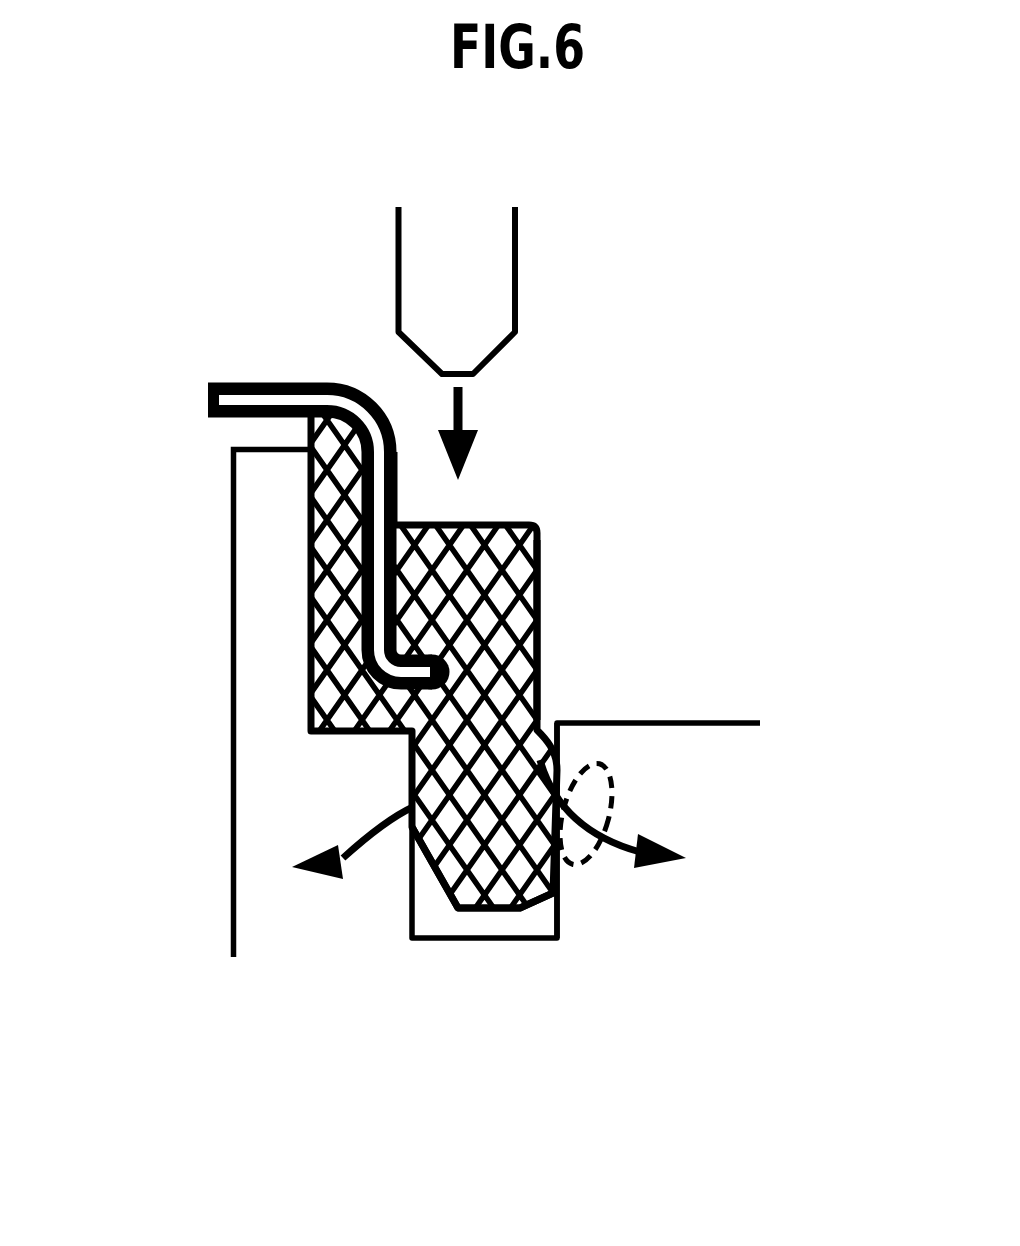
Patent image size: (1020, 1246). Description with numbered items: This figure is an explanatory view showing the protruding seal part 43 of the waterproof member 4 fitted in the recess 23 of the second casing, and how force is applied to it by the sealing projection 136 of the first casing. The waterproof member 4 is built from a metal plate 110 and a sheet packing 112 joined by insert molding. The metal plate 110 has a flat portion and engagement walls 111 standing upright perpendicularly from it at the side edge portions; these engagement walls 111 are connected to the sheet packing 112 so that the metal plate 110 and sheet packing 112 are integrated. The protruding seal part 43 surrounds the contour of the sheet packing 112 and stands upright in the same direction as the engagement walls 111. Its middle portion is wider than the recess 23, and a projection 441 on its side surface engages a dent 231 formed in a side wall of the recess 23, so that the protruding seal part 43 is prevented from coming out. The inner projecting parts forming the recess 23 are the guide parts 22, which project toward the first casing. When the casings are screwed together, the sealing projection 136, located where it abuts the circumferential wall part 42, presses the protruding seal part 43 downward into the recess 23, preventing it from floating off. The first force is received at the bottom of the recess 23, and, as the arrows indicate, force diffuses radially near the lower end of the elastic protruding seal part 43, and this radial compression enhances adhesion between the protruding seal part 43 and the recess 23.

The waterproof member 4 is at (483, 523).
The circumferential wall part 42 is at (540, 580).
The protruding seal part 43 is at (483, 850).
The projection 441 is at (595, 772).
The metal plate 110 is at (230, 383).
The engagement walls 111 is at (370, 556).
The sheet packing 112 is at (540, 627).
The sealing projection 136 is at (463, 325).
The guide parts 22 is at (263, 653).
The recess 23 is at (538, 910).
The dent 231 is at (590, 807).